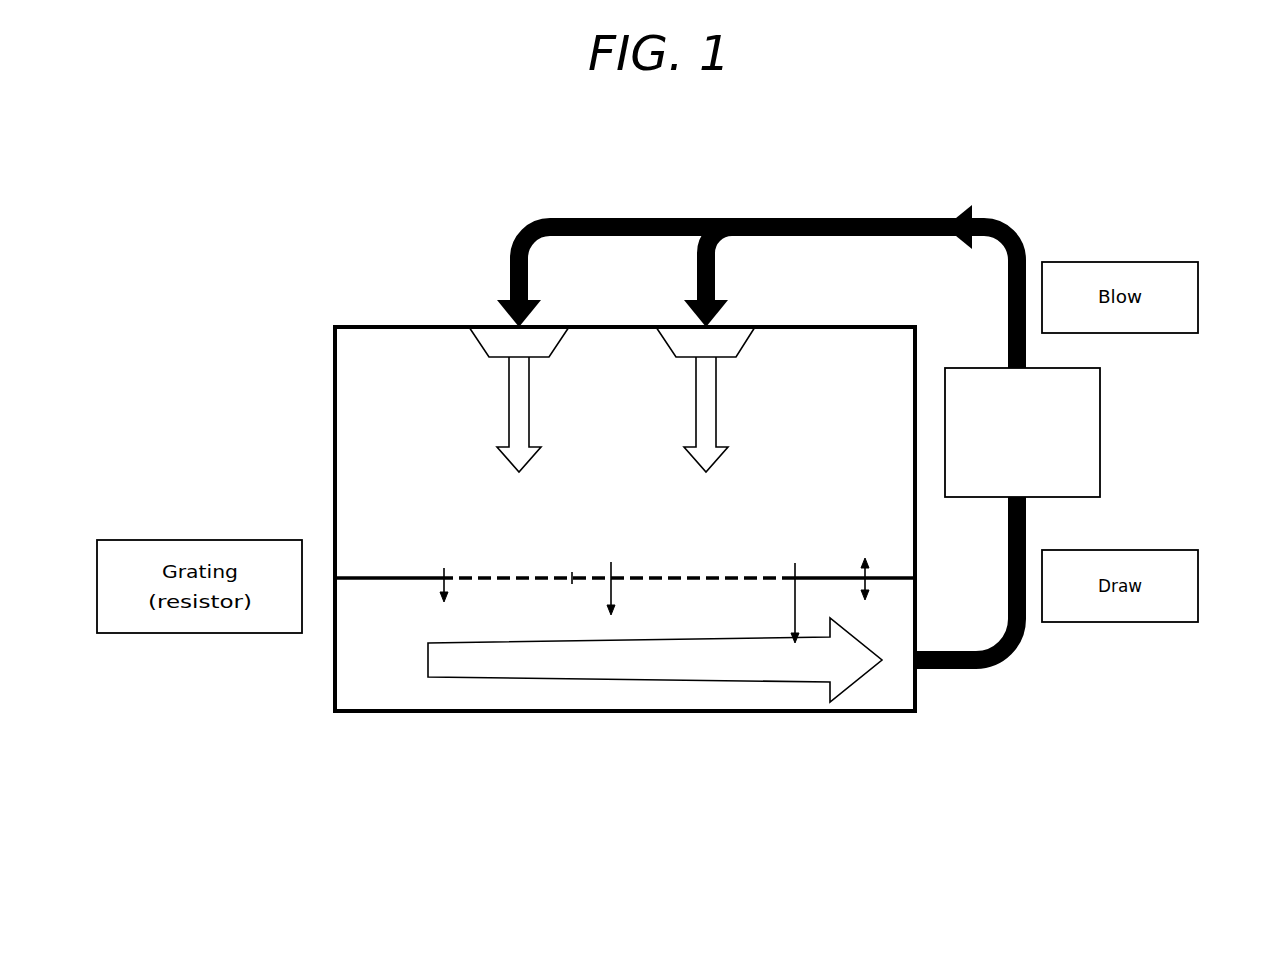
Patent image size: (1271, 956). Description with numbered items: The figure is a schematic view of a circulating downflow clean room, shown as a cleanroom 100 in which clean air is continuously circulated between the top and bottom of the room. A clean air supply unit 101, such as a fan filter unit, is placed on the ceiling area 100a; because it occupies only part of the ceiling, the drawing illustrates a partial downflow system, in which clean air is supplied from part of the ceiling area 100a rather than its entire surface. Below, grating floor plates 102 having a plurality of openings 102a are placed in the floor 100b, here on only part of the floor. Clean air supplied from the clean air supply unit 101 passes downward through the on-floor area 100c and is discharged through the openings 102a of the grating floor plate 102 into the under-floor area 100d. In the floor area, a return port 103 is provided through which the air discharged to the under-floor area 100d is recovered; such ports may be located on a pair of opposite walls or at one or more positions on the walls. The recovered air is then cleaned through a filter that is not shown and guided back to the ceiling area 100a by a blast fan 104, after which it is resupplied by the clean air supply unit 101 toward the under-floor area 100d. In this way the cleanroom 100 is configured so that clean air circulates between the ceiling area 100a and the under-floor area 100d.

The cleanroom 100 is at (370, 128).
The ceiling area 100a is at (402, 327).
The floor 100b is at (415, 578).
The on-floor area 100c is at (827, 473).
The under-floor area 100d is at (402, 648).
The clean air supply unit 101 is at (682, 357).
The grating floor plate 102 is at (500, 578).
The opening 102a is at (571, 579).
The return port 103 is at (942, 651).
The blast fan 104 is at (1100, 434).